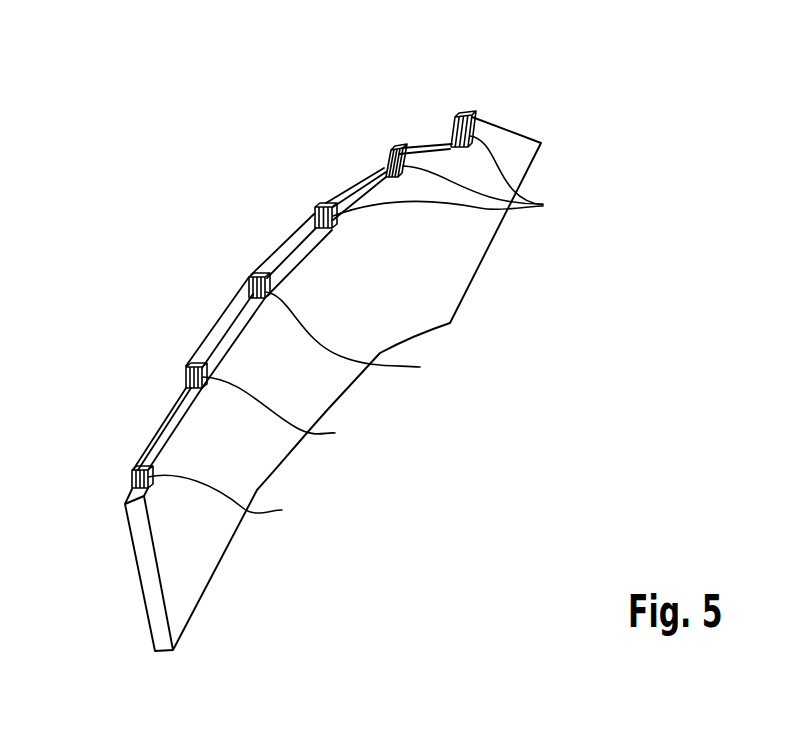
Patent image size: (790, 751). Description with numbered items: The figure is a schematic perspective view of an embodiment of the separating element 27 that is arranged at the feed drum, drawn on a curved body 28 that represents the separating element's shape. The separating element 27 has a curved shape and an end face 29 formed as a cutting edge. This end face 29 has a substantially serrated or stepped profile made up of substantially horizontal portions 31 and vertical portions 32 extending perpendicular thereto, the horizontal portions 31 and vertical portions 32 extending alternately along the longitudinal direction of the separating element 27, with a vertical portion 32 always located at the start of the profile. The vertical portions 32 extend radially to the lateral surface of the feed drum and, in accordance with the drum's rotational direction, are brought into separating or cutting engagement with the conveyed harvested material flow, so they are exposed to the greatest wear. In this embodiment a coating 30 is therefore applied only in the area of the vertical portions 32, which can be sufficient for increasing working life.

The separating element 27 is at (357, 344).
The plate 28 is at (452, 288).
The end face 29 is at (268, 286).
The coating 30 is at (463, 117).
The horizontal portions 31 is at (370, 185).
The vertical portions 32 is at (360, 332).